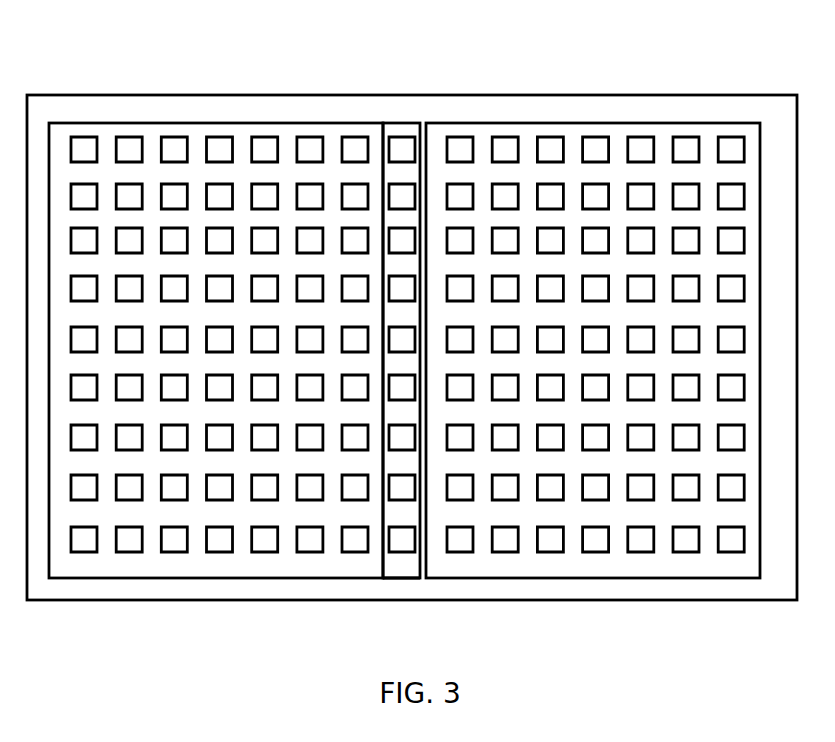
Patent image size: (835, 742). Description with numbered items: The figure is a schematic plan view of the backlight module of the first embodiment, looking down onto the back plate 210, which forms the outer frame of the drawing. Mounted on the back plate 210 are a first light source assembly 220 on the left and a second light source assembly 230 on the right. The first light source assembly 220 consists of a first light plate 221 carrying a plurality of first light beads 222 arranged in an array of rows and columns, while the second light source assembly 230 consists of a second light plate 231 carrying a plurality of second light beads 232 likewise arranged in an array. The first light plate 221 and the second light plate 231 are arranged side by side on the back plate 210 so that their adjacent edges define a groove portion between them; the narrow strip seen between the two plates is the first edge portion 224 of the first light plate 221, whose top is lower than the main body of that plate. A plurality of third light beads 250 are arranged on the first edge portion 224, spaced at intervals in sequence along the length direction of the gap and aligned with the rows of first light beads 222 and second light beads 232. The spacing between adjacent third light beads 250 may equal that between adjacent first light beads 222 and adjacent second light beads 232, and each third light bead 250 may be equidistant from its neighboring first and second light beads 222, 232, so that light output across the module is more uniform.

The back plate 210 is at (774, 562).
The first light source assembly 220 is at (216, 294).
The first light plate 221 is at (287, 133).
The first light beads 222 is at (282, 46).
The first edge portion 224 is at (409, 567).
The second light source assembly 230 is at (593, 294).
The second light plate 231 is at (576, 133).
The second light beads 232 is at (575, 46).
The third light bead 250 is at (406, 133).